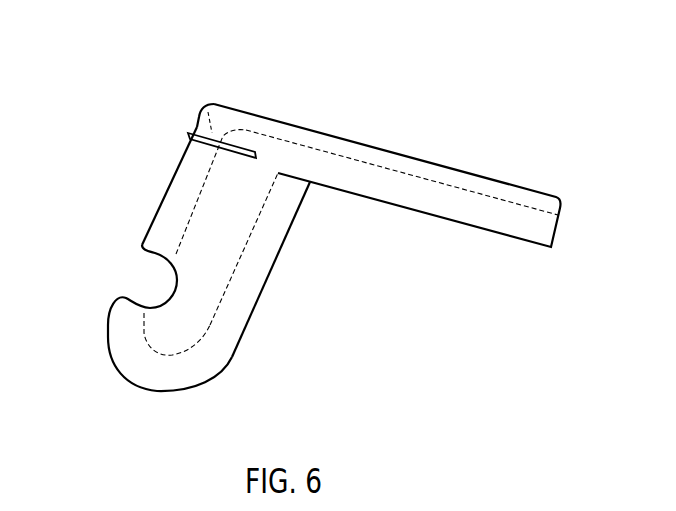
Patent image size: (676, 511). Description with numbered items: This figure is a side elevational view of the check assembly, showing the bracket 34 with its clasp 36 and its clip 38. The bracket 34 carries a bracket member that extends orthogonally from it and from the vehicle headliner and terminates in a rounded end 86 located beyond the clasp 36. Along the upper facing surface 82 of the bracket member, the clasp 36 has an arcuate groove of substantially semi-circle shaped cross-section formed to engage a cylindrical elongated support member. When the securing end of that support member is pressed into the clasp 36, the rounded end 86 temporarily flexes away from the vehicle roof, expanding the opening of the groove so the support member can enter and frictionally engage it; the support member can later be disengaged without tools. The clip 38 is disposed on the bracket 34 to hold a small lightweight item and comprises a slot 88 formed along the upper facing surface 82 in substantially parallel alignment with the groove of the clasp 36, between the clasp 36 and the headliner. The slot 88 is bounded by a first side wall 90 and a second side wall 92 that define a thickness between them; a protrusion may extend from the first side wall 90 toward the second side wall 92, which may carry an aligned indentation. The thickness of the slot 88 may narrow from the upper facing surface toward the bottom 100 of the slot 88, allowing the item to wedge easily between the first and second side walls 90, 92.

The bracket 34 is at (480, 203).
The clasp 36 is at (140, 280).
The clip 38 is at (190, 134).
The upper facing surface 82 is at (170, 183).
The rounded end 86 is at (170, 333).
The slot 88 is at (208, 112).
The first side wall 90 is at (240, 143).
The second side wall 92 is at (241, 158).
The bottom 100 is at (258, 160).